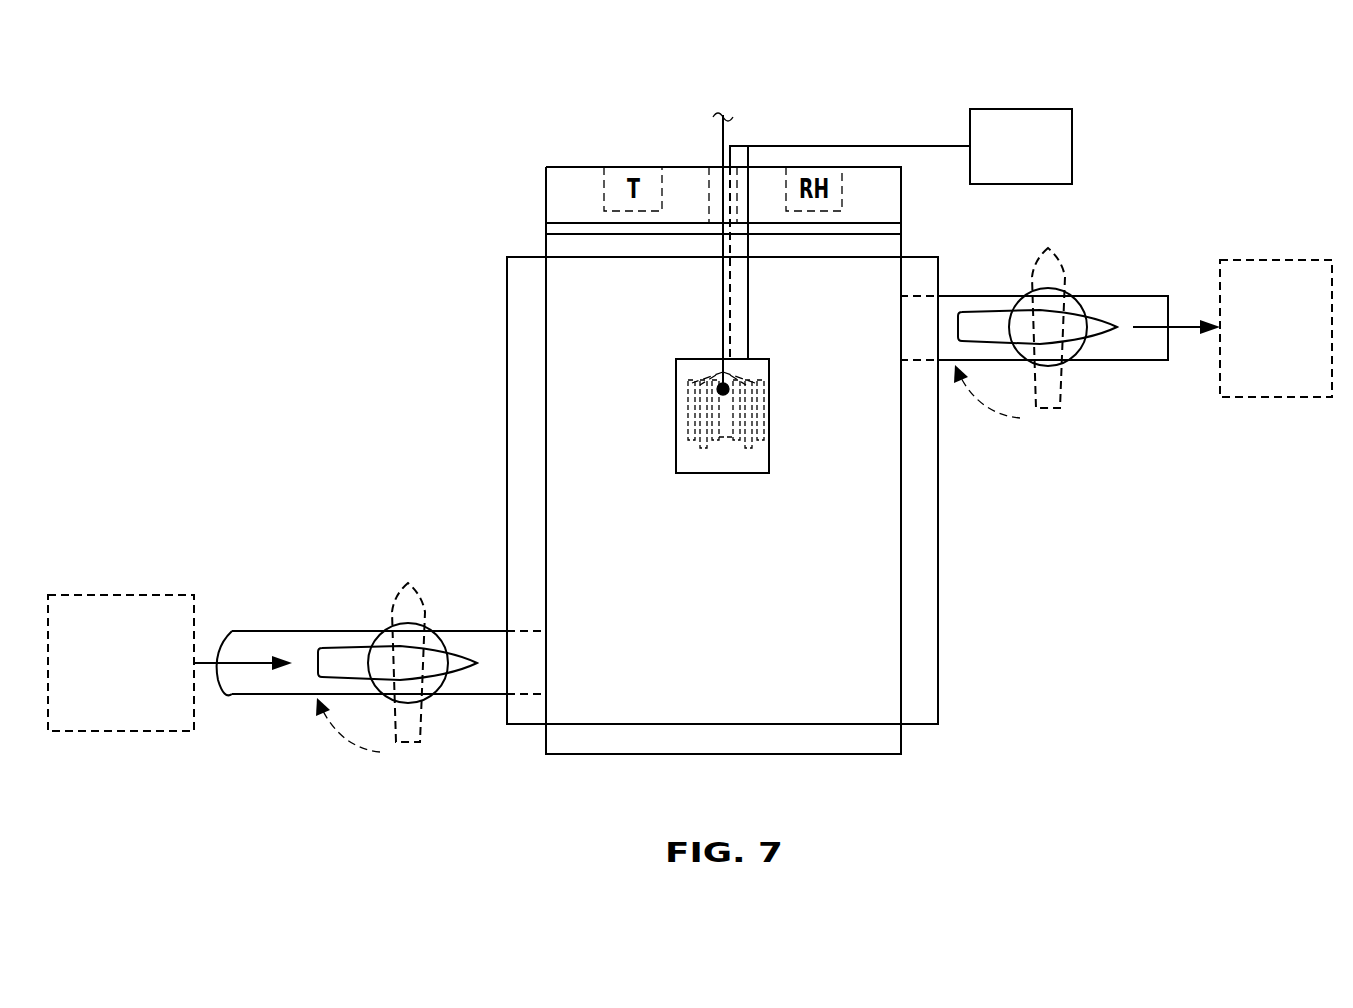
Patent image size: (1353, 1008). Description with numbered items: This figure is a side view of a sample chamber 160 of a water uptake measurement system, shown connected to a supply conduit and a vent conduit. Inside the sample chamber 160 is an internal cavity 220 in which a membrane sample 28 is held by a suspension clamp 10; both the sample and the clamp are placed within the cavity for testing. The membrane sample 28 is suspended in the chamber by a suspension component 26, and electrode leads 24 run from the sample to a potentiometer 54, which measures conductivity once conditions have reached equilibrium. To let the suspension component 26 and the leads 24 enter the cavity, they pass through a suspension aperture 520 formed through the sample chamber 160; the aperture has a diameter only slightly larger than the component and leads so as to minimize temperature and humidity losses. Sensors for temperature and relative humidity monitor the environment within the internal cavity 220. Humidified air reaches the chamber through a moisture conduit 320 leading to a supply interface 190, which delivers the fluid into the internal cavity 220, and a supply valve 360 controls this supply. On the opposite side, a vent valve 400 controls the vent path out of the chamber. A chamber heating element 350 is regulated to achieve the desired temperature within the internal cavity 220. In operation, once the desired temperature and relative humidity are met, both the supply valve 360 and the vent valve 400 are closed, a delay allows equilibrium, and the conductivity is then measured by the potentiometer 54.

The suspension clamp 10 is at (758, 446).
The electrode leads 24 is at (858, 146).
The suspension component 26 is at (723, 132).
The membrane sample 28 is at (747, 412).
The potentiometer 54 is at (1035, 163).
The sample chamber 160 is at (478, 296).
The supply interface 190 is at (310, 755).
The internal cavity 220 is at (739, 680).
The moisture conduit 320 is at (262, 630).
The chamber heating element 350 is at (917, 575).
The supply valve 360 is at (348, 648).
The vent valve 400 is at (988, 312).
The suspension aperture 520 is at (709, 187).